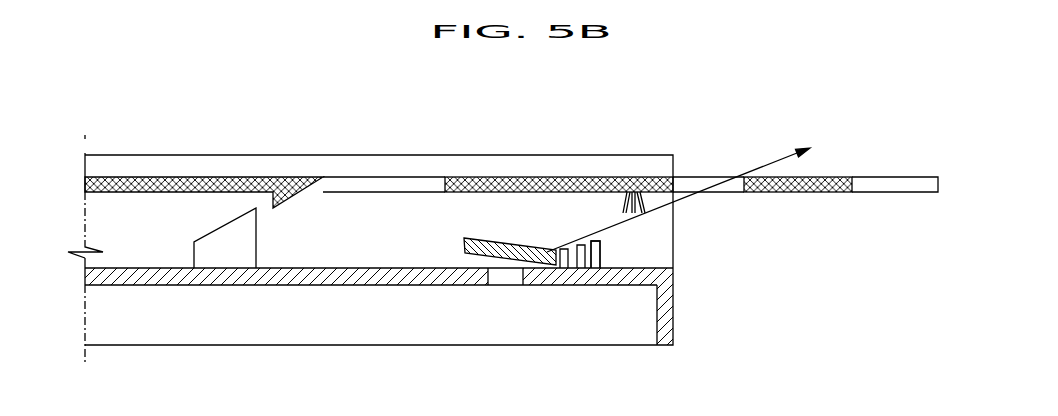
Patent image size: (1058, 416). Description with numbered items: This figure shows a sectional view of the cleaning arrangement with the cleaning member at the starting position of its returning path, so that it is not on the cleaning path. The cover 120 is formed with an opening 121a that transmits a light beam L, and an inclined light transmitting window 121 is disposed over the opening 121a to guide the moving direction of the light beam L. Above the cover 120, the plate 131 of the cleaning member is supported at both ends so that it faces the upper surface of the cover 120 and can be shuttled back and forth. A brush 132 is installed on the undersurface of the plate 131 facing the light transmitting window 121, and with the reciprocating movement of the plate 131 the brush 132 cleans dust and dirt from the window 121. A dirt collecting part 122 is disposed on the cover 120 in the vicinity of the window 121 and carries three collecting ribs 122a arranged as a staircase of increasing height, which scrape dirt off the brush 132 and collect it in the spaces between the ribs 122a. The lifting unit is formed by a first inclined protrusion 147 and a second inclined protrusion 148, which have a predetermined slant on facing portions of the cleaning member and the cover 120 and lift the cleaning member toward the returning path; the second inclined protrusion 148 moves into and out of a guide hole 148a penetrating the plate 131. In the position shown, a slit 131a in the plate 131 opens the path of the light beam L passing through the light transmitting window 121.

The cover 120 is at (353, 282).
The light transmitting window 121 is at (468, 255).
The opening 121a is at (506, 282).
The dirt collecting part 122 is at (578, 268).
The collecting rib 122a is at (598, 262).
The plate 131 is at (487, 178).
The slit 131a is at (689, 183).
The brush 132 is at (618, 203).
The first inclined protrusion 147 is at (290, 178).
The second inclined protrusion 148 is at (213, 243).
The guide hole 148a is at (438, 180).
The light beam L is at (776, 157).